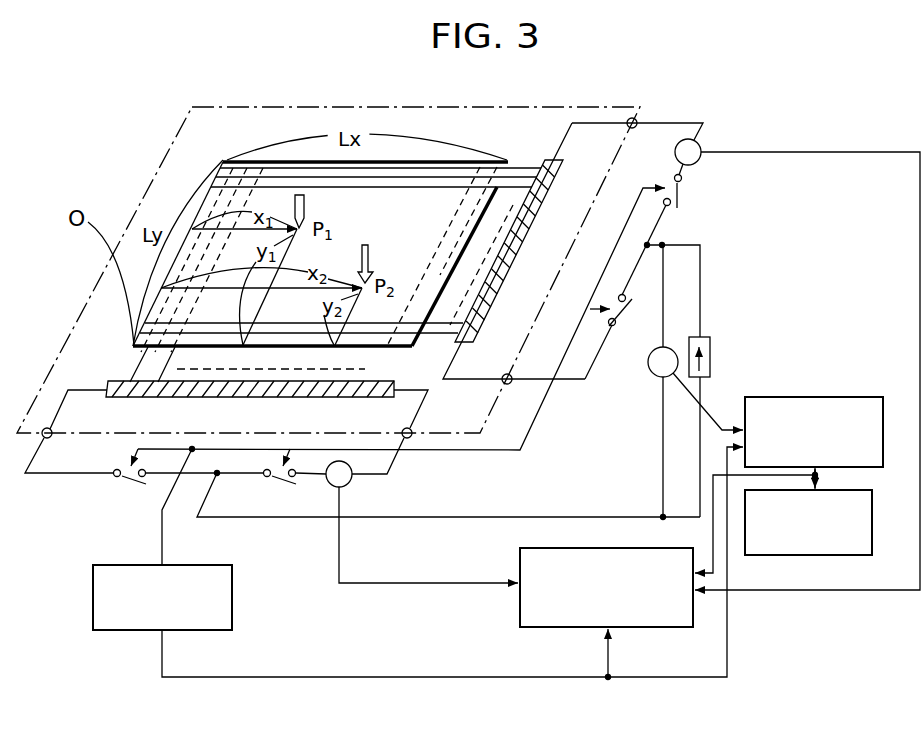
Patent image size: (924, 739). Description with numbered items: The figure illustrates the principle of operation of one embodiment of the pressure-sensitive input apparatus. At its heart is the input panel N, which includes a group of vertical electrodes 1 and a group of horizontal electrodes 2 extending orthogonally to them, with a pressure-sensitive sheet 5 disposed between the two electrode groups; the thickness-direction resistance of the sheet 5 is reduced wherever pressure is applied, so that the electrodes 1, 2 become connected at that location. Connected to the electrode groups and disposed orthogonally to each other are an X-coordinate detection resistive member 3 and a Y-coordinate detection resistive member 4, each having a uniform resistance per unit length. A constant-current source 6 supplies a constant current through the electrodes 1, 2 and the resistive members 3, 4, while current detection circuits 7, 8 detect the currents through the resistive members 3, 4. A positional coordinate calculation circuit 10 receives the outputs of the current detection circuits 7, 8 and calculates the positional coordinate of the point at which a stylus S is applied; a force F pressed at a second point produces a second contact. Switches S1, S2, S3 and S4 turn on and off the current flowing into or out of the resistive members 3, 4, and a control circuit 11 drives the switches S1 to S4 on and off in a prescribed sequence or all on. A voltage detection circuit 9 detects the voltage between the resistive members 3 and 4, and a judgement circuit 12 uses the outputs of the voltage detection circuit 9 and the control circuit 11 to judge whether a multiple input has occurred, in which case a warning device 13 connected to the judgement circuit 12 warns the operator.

The vertical electrodes 1 is at (135, 362).
The horizontal electrodes 2 is at (530, 160).
The X-coordinate detection resistive member 3 is at (238, 397).
The Y-coordinate detection resistive member 4 is at (533, 213).
The pressure-sensitive sheet 5 is at (403, 205).
The constant-current source 6 is at (710, 340).
The current detection circuit 7 is at (351, 480).
The current detection circuit 8 is at (698, 143).
The voltage detection circuit 9 is at (677, 337).
The positional coordinate calculation circuit 10 is at (597, 548).
The control circuit 11 is at (117, 632).
The judgement circuit 12 is at (805, 397).
The warning device 13 is at (872, 530).
The input panel N is at (254, 105).
The stylus S is at (309, 204).
The pressing force F is at (371, 250).
The switch S1 is at (128, 492).
The switch S2 is at (281, 492).
The switch S3 is at (617, 316).
The switch S4 is at (689, 194).